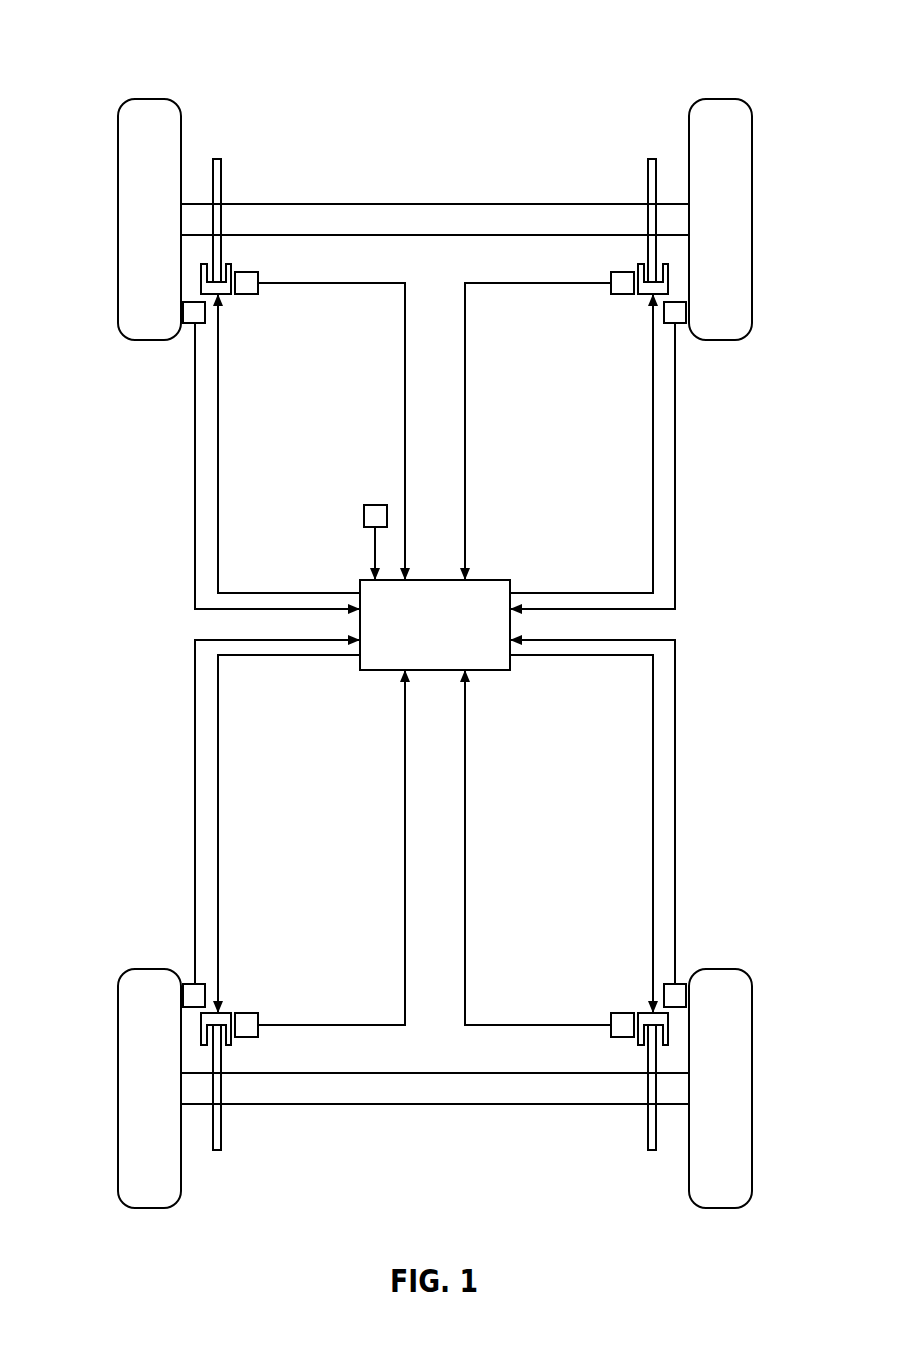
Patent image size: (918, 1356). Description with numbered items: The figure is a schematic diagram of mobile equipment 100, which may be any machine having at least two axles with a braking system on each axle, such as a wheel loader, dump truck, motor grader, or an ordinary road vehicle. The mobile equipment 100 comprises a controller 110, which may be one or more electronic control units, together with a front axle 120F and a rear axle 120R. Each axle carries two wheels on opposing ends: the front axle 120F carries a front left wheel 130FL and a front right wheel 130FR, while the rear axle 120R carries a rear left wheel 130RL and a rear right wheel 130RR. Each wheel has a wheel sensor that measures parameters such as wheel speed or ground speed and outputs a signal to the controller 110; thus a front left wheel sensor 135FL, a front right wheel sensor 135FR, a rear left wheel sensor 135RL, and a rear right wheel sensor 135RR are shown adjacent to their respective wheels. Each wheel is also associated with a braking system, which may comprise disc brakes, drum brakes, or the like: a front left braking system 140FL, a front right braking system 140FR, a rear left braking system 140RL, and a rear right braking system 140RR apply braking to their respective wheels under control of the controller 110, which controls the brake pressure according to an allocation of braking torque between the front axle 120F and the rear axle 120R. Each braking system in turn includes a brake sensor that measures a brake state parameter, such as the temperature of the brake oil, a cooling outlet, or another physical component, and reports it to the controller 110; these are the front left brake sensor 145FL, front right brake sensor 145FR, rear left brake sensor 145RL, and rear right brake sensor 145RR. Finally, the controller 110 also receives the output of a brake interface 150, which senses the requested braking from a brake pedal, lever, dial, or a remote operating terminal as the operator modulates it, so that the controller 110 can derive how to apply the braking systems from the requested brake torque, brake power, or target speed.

The mobile equipment 100 is at (780, 53).
The controller 110 is at (435, 625).
The front axle 120F is at (436, 204).
The rear axle 120R is at (433, 1104).
The front left wheel 130FL is at (152, 99).
The front right wheel 130FR is at (722, 99).
The rear left wheel 130RL is at (152, 1208).
The rear right wheel 130RR is at (720, 1208).
The front left wheel sensor 135FL is at (188, 324).
The front right wheel sensor 135FR is at (681, 324).
The rear left wheel sensor 135RL is at (187, 984).
The rear right wheel sensor 135RR is at (681, 984).
The front left braking system 140FL is at (227, 297).
The front right braking system 140FR is at (641, 297).
The rear left braking system 140RL is at (227, 1011).
The rear right braking system 140RR is at (641, 1011).
The front left brake sensor 145FL is at (245, 297).
The front right brake sensor 145FR is at (622, 297).
The rear left brake sensor 145RL is at (245, 1011).
The rear right brake sensor 145RR is at (622, 1011).
The brake interface 150 is at (378, 503).